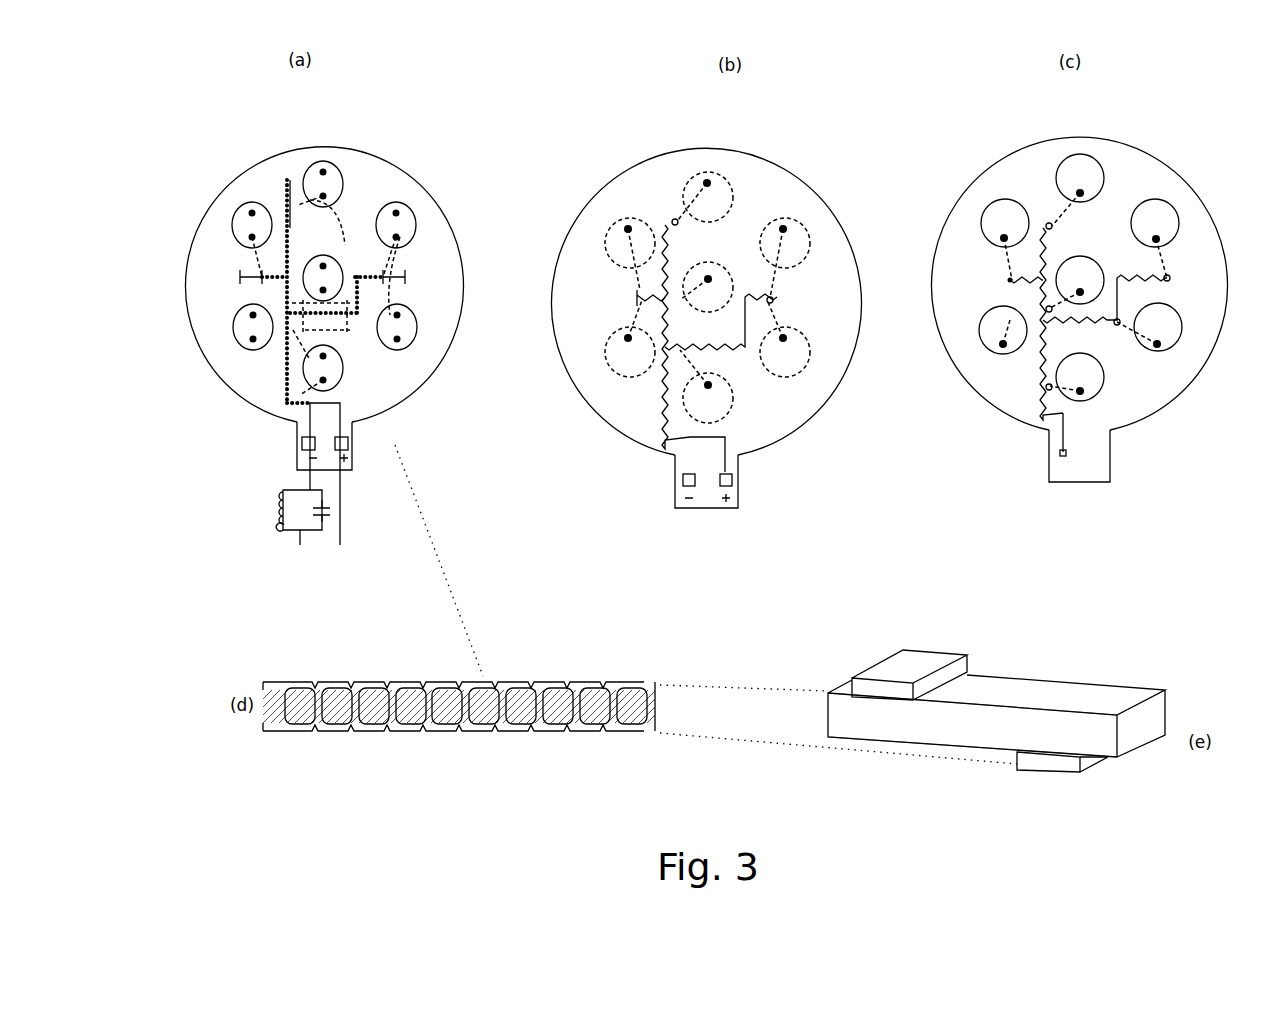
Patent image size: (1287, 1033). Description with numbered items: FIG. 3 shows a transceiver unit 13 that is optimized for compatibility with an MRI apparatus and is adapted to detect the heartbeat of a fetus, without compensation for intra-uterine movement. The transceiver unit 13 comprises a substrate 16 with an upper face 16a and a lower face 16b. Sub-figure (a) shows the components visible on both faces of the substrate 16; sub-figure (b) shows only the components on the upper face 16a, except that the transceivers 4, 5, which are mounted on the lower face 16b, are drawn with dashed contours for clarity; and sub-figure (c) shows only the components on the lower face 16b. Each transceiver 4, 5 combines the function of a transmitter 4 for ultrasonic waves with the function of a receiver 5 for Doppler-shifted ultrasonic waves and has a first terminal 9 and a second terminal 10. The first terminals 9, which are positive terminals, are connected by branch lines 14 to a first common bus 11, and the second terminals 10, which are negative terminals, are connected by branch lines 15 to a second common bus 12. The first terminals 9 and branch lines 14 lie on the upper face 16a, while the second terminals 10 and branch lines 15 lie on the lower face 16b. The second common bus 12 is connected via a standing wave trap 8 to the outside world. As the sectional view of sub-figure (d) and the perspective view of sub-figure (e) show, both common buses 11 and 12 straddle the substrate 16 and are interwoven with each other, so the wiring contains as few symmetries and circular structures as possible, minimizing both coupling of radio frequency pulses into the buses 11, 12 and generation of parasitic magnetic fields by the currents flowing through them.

The transmitter 4 is at (338, 163).
The receiver 5 is at (628, 218).
The standing wave trap 8 is at (283, 512).
The first terminal 9 is at (328, 172).
The second terminal 10 is at (330, 195).
The first common bus 11 is at (352, 455).
The second common bus 12 is at (297, 425).
The transceiver unit 13 is at (210, 104).
The branch line 14 is at (312, 170).
The branch line 15 is at (297, 175).
The substrate 16 is at (272, 152).
The upper face 16a is at (766, 176).
The lower face 16b is at (1054, 135).